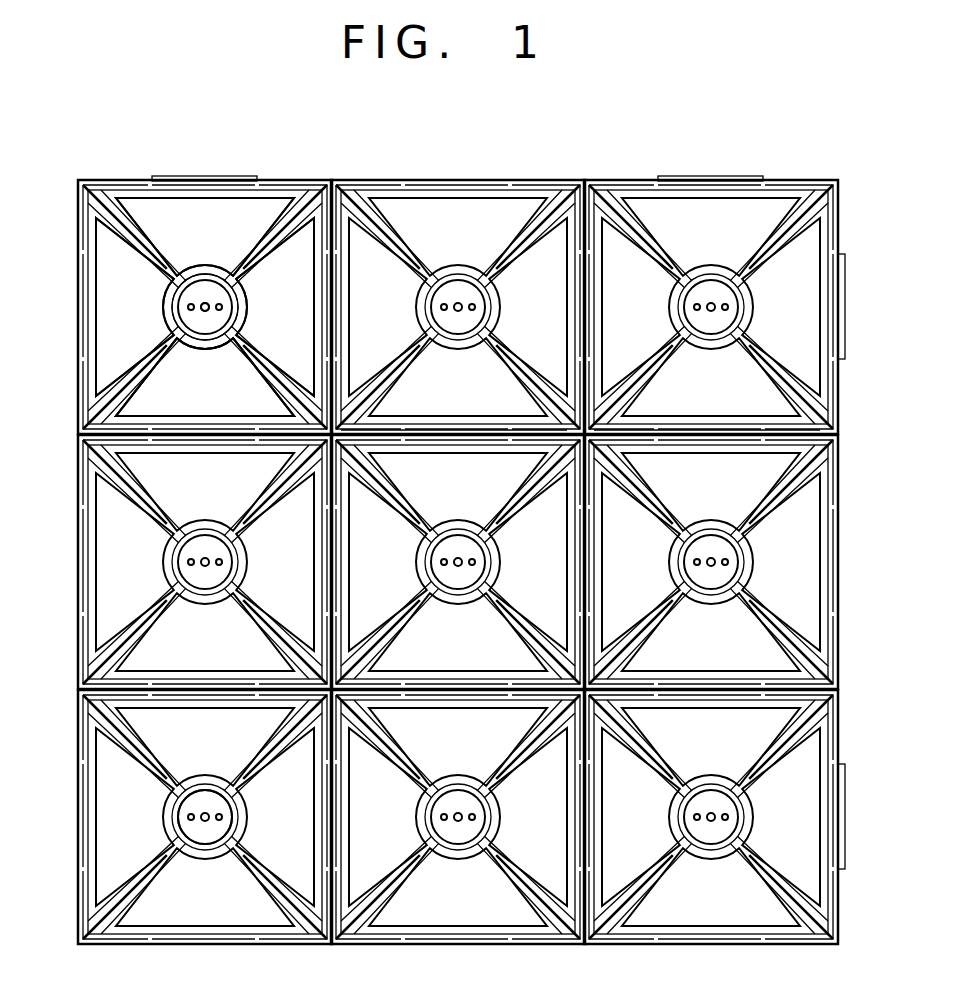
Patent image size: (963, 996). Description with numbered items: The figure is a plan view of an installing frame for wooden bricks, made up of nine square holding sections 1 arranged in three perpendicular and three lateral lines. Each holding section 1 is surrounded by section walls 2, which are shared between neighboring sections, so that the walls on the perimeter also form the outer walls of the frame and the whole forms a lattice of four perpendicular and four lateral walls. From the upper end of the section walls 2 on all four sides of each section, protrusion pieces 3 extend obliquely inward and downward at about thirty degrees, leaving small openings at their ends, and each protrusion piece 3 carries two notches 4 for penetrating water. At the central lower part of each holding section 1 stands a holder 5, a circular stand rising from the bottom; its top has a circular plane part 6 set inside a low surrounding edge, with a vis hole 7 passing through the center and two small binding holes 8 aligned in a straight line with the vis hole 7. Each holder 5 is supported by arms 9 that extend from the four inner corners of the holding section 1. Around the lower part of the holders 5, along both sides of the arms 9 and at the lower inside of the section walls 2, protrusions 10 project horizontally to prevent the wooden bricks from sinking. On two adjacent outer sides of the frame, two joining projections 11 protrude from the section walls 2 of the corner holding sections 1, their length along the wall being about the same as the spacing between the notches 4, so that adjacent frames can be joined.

The holding section 1 is at (118, 307).
The section wall 2 is at (415, 178).
The protrusion piece 3 is at (424, 440).
The notch 4 is at (408, 199).
The holder 5 is at (212, 270).
The circular plane part 6 is at (224, 342).
The vis hole 7 is at (222, 311).
The binding hole 8 is at (418, 820).
The arm 9 is at (270, 368).
The protrusion for preventing sinking 10 is at (184, 424).
The joining projection 11 is at (180, 176).